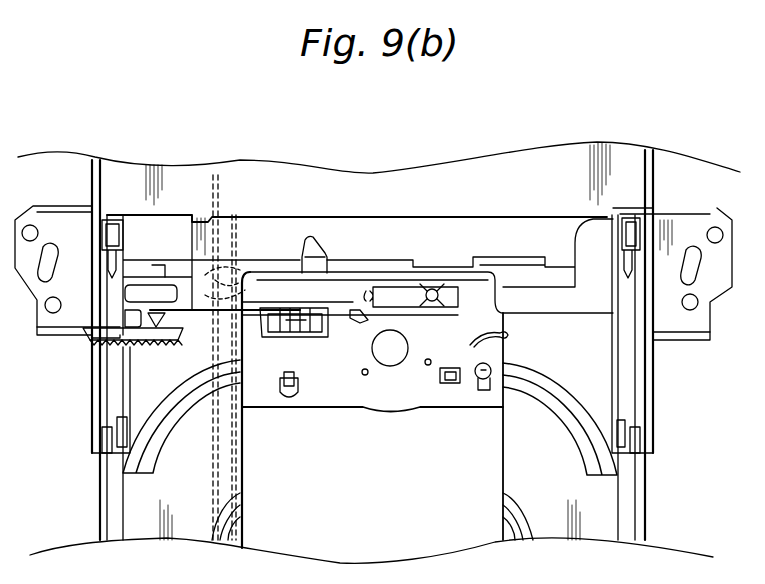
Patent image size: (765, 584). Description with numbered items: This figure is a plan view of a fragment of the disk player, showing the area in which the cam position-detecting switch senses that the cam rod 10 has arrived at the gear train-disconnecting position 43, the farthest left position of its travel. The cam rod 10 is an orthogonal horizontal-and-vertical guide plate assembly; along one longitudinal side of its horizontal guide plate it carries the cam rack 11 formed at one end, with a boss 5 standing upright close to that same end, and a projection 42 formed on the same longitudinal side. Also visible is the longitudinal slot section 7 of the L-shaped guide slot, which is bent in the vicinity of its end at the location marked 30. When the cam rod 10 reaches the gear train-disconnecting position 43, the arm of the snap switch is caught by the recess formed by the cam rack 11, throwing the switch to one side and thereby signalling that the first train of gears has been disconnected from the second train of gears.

The boss 5 is at (222, 220).
The longitudinal slot section 7 is at (243, 472).
The cam rod 10 is at (318, 257).
The cam rack 11 is at (107, 348).
The bend of the longitudinal slot section 30 is at (240, 267).
The projection 42 is at (295, 327).
The gear train-disconnecting position 43 is at (160, 343).